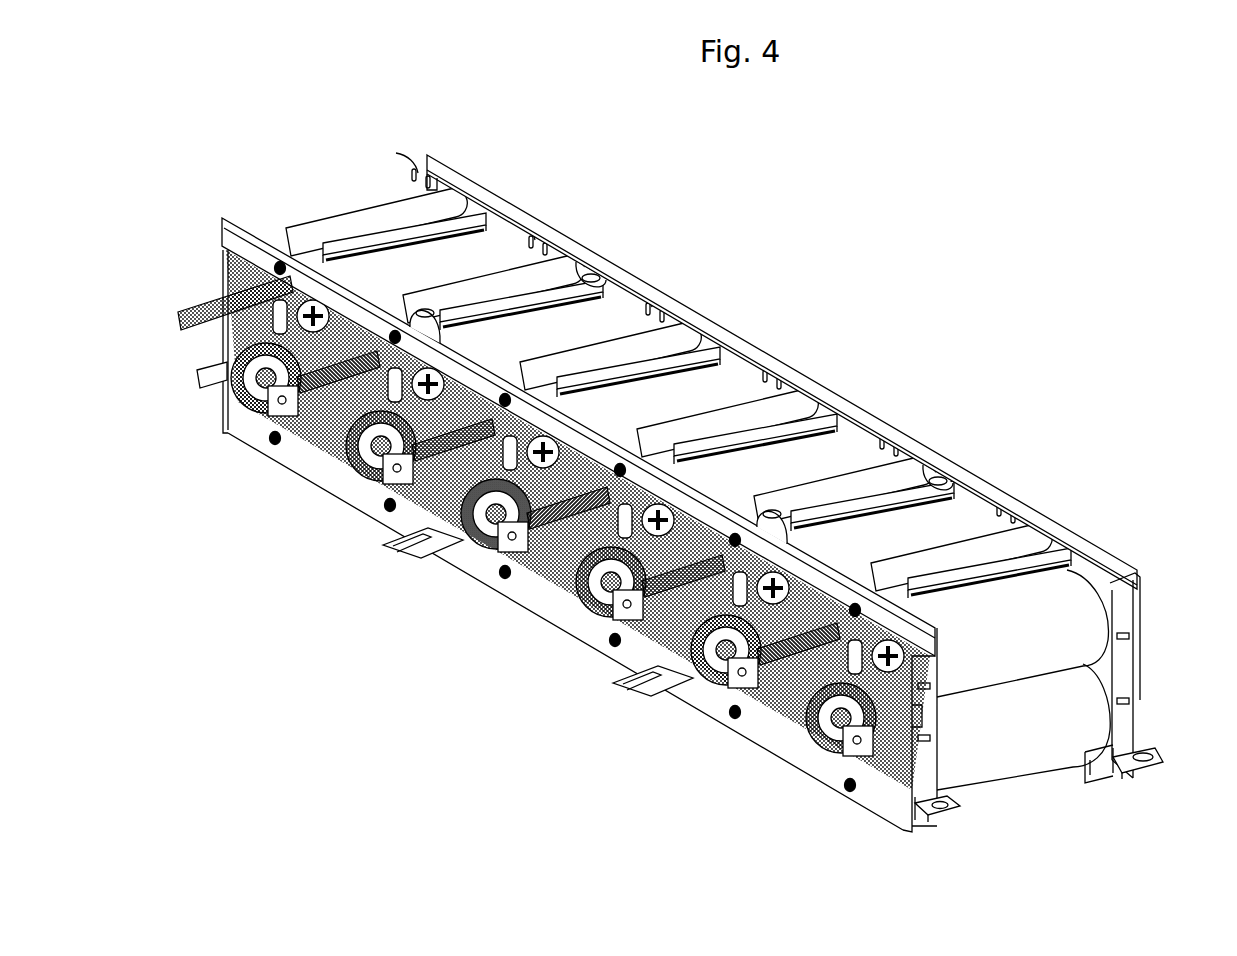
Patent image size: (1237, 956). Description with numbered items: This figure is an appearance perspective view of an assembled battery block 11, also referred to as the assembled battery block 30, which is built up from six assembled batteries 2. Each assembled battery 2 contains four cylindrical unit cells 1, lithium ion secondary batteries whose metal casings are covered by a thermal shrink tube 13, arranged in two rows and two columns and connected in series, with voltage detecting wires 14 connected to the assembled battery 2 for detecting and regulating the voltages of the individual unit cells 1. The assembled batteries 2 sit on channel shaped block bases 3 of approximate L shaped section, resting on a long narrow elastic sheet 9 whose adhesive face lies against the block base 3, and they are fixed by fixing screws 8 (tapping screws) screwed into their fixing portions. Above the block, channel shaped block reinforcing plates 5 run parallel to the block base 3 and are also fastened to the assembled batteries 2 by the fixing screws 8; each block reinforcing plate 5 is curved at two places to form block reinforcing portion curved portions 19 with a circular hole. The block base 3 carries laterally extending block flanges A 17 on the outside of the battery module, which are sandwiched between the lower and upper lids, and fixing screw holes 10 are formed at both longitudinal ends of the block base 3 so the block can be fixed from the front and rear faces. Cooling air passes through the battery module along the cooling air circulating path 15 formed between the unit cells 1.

The unit cell 1 is at (363, 212).
The assembled battery 2 is at (890, 505).
The block base 3 is at (547, 620).
The block reinforcing plate 5 is at (250, 212).
The fixing screw 8 is at (212, 217).
The elastic sheet 9 is at (1090, 767).
The fixing screw hole 10 is at (200, 367).
The assembled battery block 11 is at (793, 362).
The thermal shrink tube 13 is at (580, 318).
The voltage detecting wire 14 is at (307, 443).
The cooling air circulating path 15 is at (823, 480).
The block flange A 17 is at (400, 553).
The block reinforcing portion curved portion 19 is at (584, 266).
The assembled battery block 30 is at (737, 147).